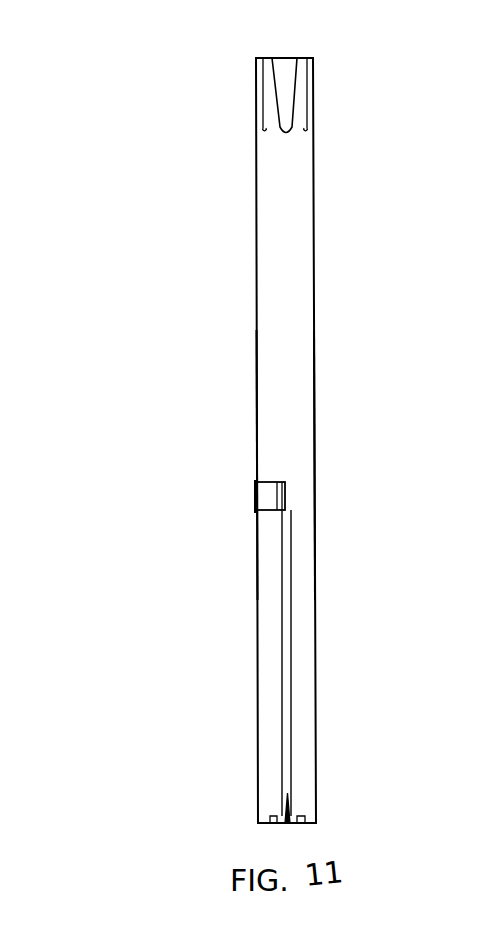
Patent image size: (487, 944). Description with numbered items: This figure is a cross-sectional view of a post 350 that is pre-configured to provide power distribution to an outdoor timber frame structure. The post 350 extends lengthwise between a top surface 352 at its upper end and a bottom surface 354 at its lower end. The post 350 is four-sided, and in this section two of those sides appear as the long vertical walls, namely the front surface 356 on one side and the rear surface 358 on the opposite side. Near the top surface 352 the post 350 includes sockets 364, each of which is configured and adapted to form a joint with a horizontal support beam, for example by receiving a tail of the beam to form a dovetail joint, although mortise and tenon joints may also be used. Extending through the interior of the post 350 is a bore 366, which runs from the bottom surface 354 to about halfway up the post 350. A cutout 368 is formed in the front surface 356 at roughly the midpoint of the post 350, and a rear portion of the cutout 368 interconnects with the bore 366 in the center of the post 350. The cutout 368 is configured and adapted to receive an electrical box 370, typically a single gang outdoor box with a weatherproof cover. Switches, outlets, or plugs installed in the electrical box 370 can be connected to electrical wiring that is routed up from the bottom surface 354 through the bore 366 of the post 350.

The post 350 is at (316, 245).
The top surface 352 is at (305, 55).
The bottom surface 354 is at (315, 825).
The front surface 356 is at (257, 412).
The rear surface 358 is at (317, 408).
The sockets 364 is at (310, 93).
The bore 366 is at (292, 602).
The cutout 368 is at (283, 493).
The electrical box 370 is at (270, 500).